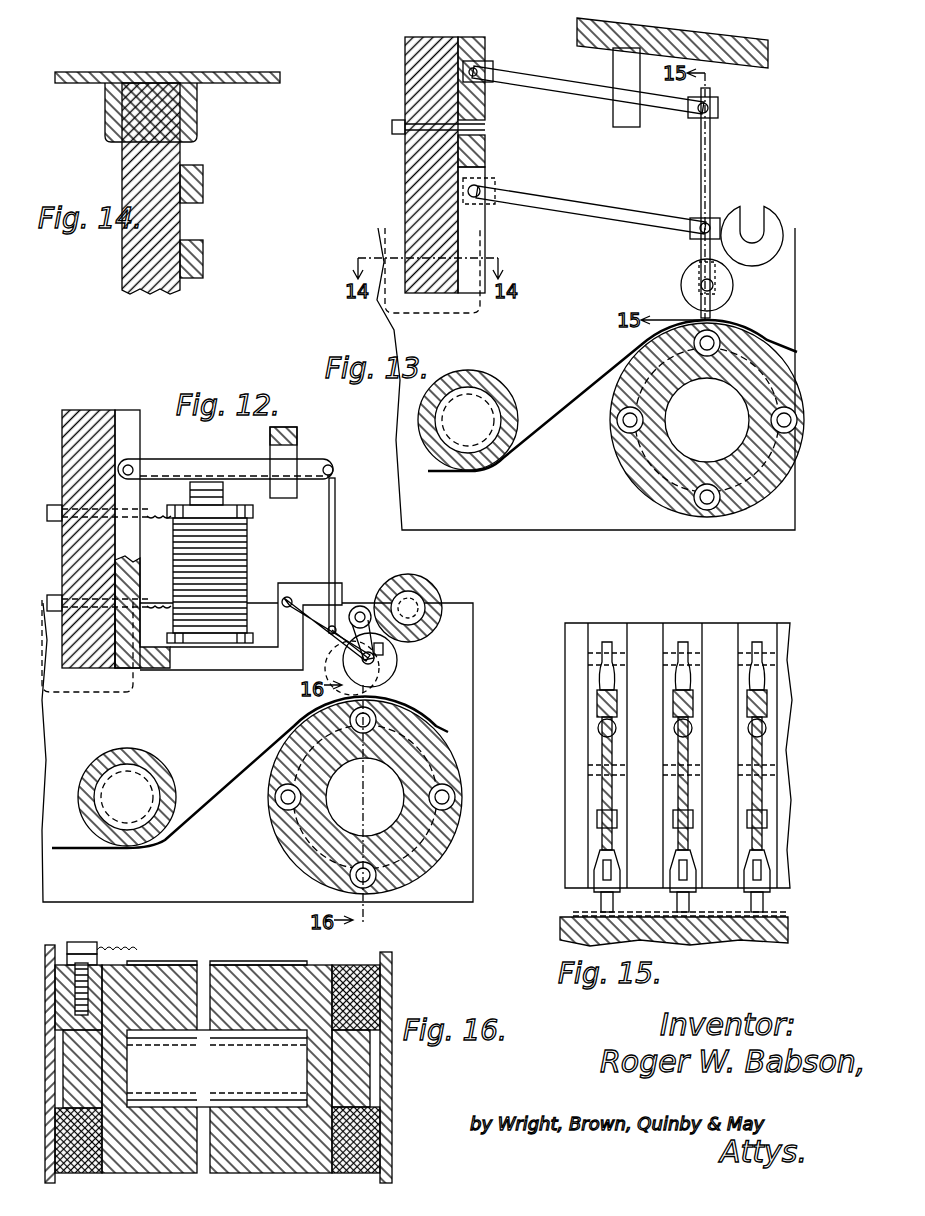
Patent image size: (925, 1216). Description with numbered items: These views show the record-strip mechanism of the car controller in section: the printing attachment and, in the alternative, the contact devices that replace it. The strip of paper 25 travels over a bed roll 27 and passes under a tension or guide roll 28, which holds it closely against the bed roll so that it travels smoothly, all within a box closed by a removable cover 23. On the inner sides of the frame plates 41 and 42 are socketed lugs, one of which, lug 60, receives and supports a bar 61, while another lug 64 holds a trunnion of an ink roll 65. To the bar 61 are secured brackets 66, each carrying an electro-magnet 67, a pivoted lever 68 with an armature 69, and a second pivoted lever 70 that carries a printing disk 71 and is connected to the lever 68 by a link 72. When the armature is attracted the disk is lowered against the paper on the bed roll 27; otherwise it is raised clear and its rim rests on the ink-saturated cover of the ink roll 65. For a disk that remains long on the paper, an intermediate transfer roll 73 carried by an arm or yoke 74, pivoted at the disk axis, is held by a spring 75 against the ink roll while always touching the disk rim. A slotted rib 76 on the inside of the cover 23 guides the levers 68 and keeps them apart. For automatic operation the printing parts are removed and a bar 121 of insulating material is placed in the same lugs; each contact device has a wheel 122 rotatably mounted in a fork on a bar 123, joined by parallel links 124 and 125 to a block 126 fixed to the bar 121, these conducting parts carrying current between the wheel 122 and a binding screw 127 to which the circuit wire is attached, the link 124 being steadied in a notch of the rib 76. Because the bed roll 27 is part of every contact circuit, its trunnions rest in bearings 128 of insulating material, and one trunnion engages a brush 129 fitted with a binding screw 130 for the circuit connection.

In FIG. 13, the removable cover 23 is at (752, 70).
In FIG. 13, the strip of paper 25 is at (556, 410).
In FIG. 12, the strip of paper 25 is at (262, 748).
In FIG. 15, the strip of paper 25 is at (738, 920).
In FIG. 16, the strip of paper 25 is at (196, 962).
In FIG. 13, the bed roll 27 is at (634, 466).
In FIG. 12, the bed roll 27 is at (290, 846).
In FIG. 15, the bed roll 27 is at (562, 936).
In FIG. 16, the bed roll 27 is at (246, 986).
In FIG. 13, the tension or guide roll 28 is at (502, 392).
In FIG. 12, the tension or guide roll 28 is at (140, 750).
In FIG. 16, the frame plate 41 is at (49, 1008).
In FIG. 14, the frame plate 42 is at (264, 84).
In FIG. 13, the frame plate 42 is at (555, 520).
In FIG. 16, the frame plate 42 is at (392, 1130).
In FIG. 14, the socketed lug 60 is at (182, 110).
In FIG. 13, the socketed lug 60 is at (396, 236).
In FIG. 12, the socketed lug 60 is at (78, 694).
In FIG. 12, the bar 61 is at (62, 432).
In FIG. 13, the socketed lug 64 is at (758, 216).
In FIG. 12, the socketed lug 64 is at (416, 584).
In FIG. 12, the ink roll 65 is at (430, 592).
In FIG. 12, the bracket 66 is at (218, 668).
In FIG. 12, the electro-magnet 67 is at (247, 548).
In FIG. 12, the pivoted lever 68 is at (246, 466).
In FIG. 12, the armature 69 is at (211, 482).
In FIG. 12, the pivoted lever 70 is at (336, 640).
In FIG. 12, the printing disk 71 is at (398, 672).
In FIG. 12, the link 72 is at (335, 526).
In FIG. 12, the intermediate transfer roll 73 is at (344, 628).
In FIG. 12, the arm or yoke 74 is at (372, 605).
In FIG. 12, the spring 75 is at (390, 650).
In FIG. 13, the rib 76 is at (614, 70).
In FIG. 12, the rib 76 is at (298, 441).
In FIG. 14, the bar 121 is at (160, 156).
In FIG. 13, the bar 121 is at (418, 172).
In FIG. 15, the bar 121 is at (642, 665).
In FIG. 13, the contact wheel 122 is at (684, 284).
In FIG. 15, the contact wheel 122 is at (600, 903).
In FIG. 13, the bar 123 is at (701, 150).
In FIG. 15, the bar 123 is at (600, 782).
In FIG. 13, the link 124 is at (567, 88).
In FIG. 15, the link 124 is at (600, 672).
In FIG. 13, the link 125 is at (595, 208).
In FIG. 15, the link 125 is at (598, 812).
In FIG. 14, the block 126 is at (194, 190).
In FIG. 13, the block 126 is at (474, 154).
In FIG. 15, the block 126 is at (590, 717).
In FIG. 13, the binding screw 127 is at (426, 126).
In FIG. 15, the binding screw 127 is at (598, 732).
In FIG. 16, the bearing 128 is at (366, 976).
In FIG. 16, the brush 129 is at (112, 972).
In FIG. 16, the binding screw 130 is at (92, 944).